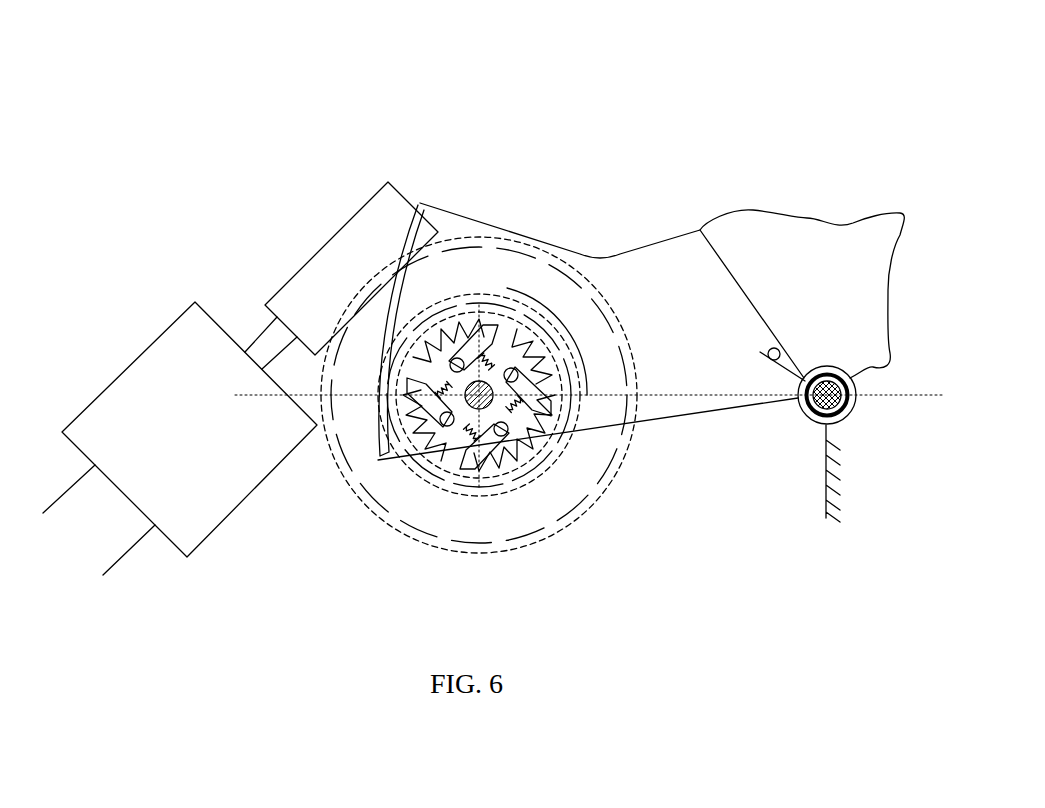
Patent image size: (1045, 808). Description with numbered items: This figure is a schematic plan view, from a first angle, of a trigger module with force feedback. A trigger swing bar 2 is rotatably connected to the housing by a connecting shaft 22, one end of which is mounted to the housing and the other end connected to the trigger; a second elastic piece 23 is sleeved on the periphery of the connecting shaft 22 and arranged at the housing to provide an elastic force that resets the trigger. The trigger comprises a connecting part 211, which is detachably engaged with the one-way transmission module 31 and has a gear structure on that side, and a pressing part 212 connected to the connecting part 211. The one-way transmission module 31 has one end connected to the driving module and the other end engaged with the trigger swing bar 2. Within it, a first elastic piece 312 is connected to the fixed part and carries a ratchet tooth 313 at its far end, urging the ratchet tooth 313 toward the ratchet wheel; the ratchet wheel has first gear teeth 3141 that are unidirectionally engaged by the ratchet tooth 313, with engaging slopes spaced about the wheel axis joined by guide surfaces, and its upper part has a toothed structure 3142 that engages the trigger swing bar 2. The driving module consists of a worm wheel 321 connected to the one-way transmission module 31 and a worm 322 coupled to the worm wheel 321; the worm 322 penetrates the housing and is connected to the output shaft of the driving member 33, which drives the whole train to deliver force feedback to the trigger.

The trigger swing bar 2 is at (378, 452).
The connecting part 211 is at (838, 222).
The pressing part 212 is at (635, 278).
The connecting shaft 22 is at (817, 412).
The second elastic piece 23 is at (824, 447).
The one-way transmission module 31 is at (511, 355).
The first elastic piece 312 is at (547, 458).
The ratchet tooth 313 is at (487, 467).
The first gear teeth 3141 is at (448, 462).
The toothed structure 3142 is at (452, 302).
The worm wheel 321 is at (378, 493).
The worm 322 is at (340, 235).
The driving member 33 is at (183, 360).